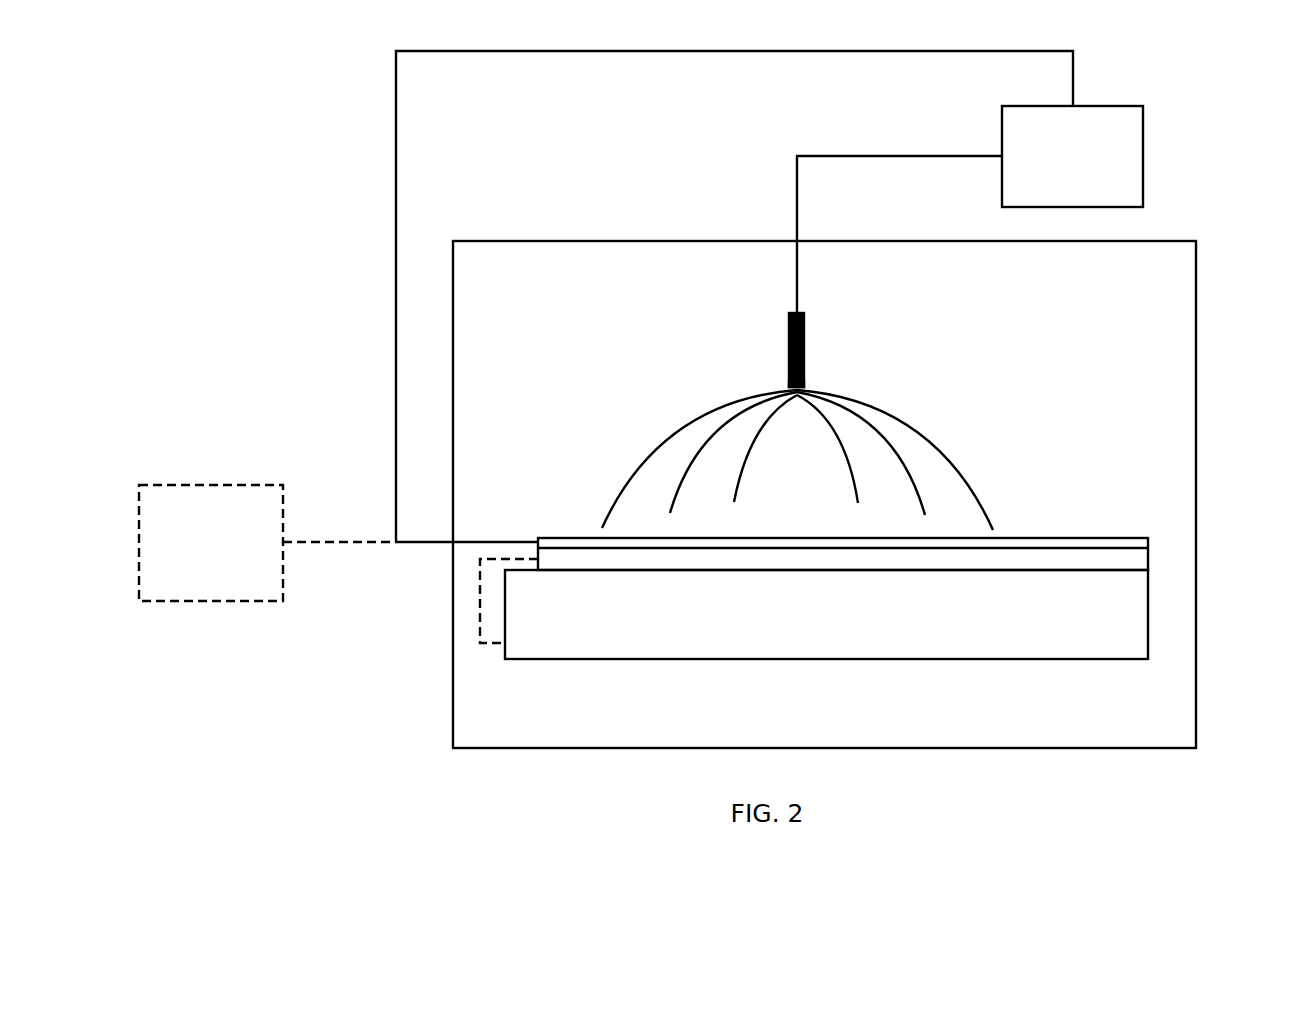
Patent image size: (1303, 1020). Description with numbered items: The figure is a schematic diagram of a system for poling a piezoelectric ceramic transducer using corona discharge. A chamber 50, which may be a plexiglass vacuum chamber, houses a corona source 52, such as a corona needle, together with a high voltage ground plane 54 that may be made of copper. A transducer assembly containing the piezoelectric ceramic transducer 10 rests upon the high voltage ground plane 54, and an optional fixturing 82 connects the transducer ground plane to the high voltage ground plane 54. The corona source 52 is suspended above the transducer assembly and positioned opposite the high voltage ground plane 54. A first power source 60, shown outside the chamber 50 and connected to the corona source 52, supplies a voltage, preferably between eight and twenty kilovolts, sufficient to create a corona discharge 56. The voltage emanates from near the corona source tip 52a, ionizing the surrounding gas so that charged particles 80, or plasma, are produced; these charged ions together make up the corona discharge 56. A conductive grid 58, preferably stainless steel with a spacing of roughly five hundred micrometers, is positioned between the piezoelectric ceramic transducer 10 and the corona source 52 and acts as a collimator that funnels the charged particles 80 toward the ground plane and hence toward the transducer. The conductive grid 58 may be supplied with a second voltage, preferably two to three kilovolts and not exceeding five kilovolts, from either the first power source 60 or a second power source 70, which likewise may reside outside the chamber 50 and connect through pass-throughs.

The piezoelectric ceramic transducer 10 is at (1150, 550).
The chamber 50 is at (1198, 367).
The corona source 52 is at (788, 318).
The corona source tip 52a is at (805, 372).
The high voltage ground plane 54 is at (858, 660).
The corona discharge 56 is at (908, 378).
The conductive grid 58 is at (1100, 537).
The first power source 60 is at (1145, 152).
The second power source 70 is at (216, 485).
The charged particles 80 is at (957, 468).
The fixturing 82 is at (480, 605).